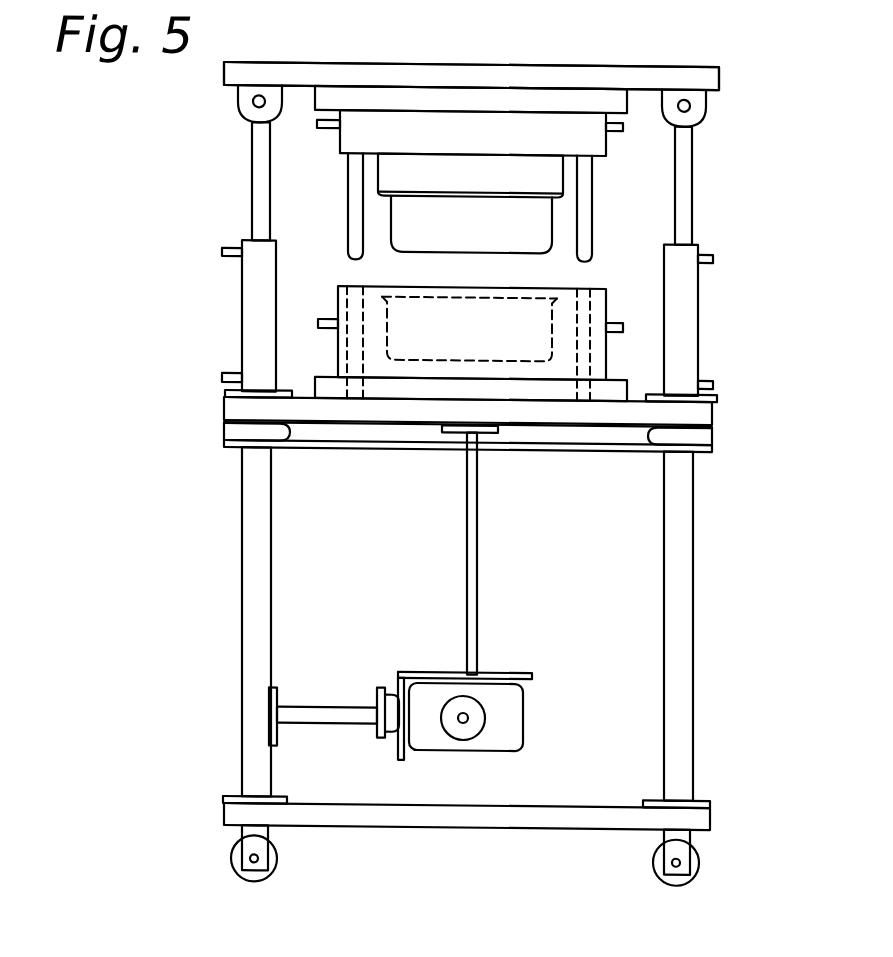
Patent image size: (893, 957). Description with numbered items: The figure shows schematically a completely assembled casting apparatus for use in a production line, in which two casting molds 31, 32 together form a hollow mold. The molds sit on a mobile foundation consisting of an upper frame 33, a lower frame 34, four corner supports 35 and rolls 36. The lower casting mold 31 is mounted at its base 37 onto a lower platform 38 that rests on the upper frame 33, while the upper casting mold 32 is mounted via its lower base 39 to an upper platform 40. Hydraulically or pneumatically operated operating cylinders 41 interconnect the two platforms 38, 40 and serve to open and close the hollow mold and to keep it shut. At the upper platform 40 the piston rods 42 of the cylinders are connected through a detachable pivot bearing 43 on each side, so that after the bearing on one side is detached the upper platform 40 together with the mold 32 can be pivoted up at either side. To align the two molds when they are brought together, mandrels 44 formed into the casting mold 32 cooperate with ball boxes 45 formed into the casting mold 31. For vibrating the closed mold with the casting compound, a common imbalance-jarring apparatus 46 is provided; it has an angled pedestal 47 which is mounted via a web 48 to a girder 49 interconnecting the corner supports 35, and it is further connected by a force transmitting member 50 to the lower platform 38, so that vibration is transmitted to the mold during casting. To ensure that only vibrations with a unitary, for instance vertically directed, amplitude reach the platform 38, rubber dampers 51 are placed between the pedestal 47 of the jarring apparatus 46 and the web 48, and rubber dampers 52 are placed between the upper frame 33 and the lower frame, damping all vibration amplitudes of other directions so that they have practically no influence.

The casting mold 31 is at (603, 344).
The casting mold 32 is at (595, 141).
The upper frame 33 is at (708, 447).
The lower frame 34 is at (702, 810).
The corner supports 35 is at (255, 530).
The rolls 36 is at (232, 870).
The base 37 is at (613, 384).
The lower platform 38 is at (702, 410).
The lower base 39 is at (513, 75).
The upper platform 40 is at (710, 77).
The operating cylinders 41 is at (252, 270).
The piston rods 42 is at (260, 190).
The detachable pivot bearing 43 is at (253, 100).
The mandrels 44 is at (357, 189).
The ball boxes 45 is at (350, 297).
The imbalance-jarring apparatus 46 is at (512, 714).
The angled pedestal 47 is at (403, 667).
The web 48 is at (322, 704).
The girder 49 is at (270, 730).
The force transmitting member 50 is at (477, 532).
The rubber dampers 51 is at (390, 718).
The rubber dampers 52 is at (228, 430).